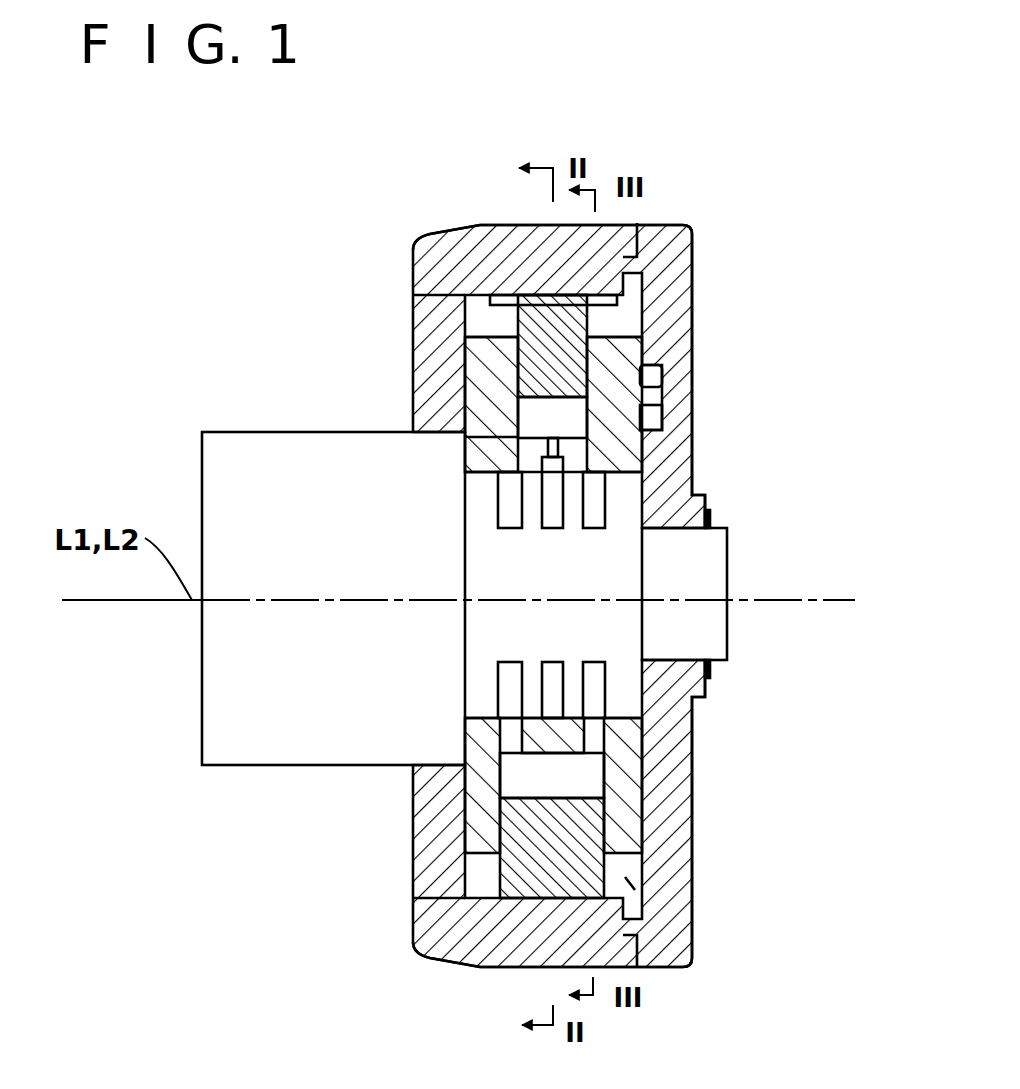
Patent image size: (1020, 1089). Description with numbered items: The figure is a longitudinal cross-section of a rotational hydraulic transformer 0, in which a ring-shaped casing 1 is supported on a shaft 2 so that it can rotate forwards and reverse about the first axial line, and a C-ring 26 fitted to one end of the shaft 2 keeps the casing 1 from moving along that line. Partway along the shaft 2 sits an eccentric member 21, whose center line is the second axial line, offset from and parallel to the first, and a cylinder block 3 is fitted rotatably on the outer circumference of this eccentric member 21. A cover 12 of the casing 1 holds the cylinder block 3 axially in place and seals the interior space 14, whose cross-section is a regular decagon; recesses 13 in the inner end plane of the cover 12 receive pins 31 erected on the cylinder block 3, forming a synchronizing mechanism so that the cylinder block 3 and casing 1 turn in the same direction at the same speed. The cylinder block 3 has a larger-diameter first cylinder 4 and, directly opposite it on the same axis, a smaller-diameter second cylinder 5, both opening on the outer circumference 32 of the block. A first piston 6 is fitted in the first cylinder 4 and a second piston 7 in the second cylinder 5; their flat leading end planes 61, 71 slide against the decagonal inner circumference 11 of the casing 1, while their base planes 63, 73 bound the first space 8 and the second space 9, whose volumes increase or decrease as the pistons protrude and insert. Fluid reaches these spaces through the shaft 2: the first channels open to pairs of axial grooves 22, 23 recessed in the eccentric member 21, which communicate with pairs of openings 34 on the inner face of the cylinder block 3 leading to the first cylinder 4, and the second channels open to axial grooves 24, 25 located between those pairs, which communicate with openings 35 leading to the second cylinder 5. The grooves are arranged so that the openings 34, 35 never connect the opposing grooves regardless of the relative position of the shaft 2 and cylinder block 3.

The rotational hydraulic transformer 0 is at (146, 711).
The ring-shaped casing 1 is at (702, 208).
The shaft 2 is at (233, 408).
The cylinder block 3 is at (487, 363).
The first cylinders 4 is at (603, 775).
The second cylinders 5 is at (588, 420).
The first pistons 6 is at (560, 855).
The second pistons 7 is at (590, 320).
The first spaces 8 is at (547, 772).
The second spaces 9 is at (545, 428).
The inner circumference of the casing 11 is at (485, 322).
The cover 12 is at (660, 383).
The recesses 13 is at (662, 418).
The interior space 14 is at (463, 312).
The eccentric member 21 is at (627, 552).
The axial grooves 22 is at (508, 703).
The axial grooves 23 is at (497, 493).
The axial groove 24 is at (553, 687).
The axial groove 25 is at (553, 467).
The C-ring 26 is at (710, 673).
The pins 31 is at (640, 360).
The outer circumference of the cylinder block 32 is at (600, 303).
The openings 34 is at (690, 697).
The openings 35 is at (705, 510).
The leading end plane 61 is at (563, 900).
The base plane 63 is at (600, 755).
The leading end plane 71 is at (537, 290).
The base plane 73 is at (518, 413).